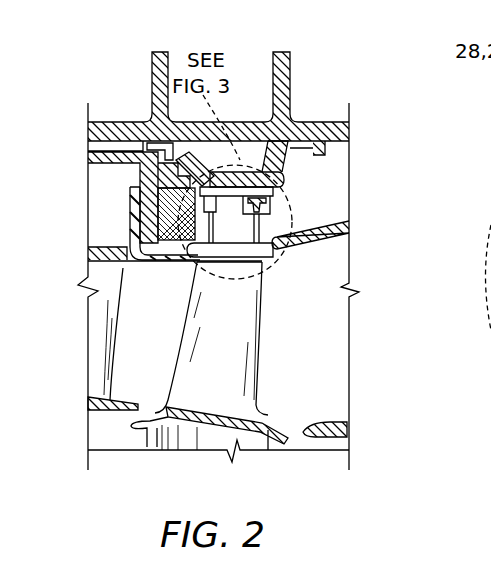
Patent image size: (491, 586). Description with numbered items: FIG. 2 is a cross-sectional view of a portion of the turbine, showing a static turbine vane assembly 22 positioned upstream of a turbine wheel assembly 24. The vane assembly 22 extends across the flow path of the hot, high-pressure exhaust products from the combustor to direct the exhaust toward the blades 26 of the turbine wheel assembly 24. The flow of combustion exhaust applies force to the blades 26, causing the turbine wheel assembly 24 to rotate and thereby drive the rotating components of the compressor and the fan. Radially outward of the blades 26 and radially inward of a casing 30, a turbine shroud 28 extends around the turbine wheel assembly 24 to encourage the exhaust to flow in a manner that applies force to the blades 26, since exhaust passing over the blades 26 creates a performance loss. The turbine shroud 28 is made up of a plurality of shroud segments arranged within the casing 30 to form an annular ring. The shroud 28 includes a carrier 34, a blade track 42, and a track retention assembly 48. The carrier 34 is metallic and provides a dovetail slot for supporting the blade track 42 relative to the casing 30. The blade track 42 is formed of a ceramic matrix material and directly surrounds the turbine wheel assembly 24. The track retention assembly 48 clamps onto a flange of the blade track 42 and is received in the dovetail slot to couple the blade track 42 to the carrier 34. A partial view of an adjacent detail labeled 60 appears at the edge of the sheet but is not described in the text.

The static turbine vane assembly 22 is at (105, 370).
The turbine wheel assembly 24 is at (272, 380).
The blades 26 is at (180, 362).
The turbine shroud 28 is at (283, 178).
The casing 30 is at (310, 121).
The carrier 34 is at (247, 165).
The blade track 42 is at (261, 246).
The track retention assembly 48 is at (277, 203).
The seal segment 60 is at (484, 271).